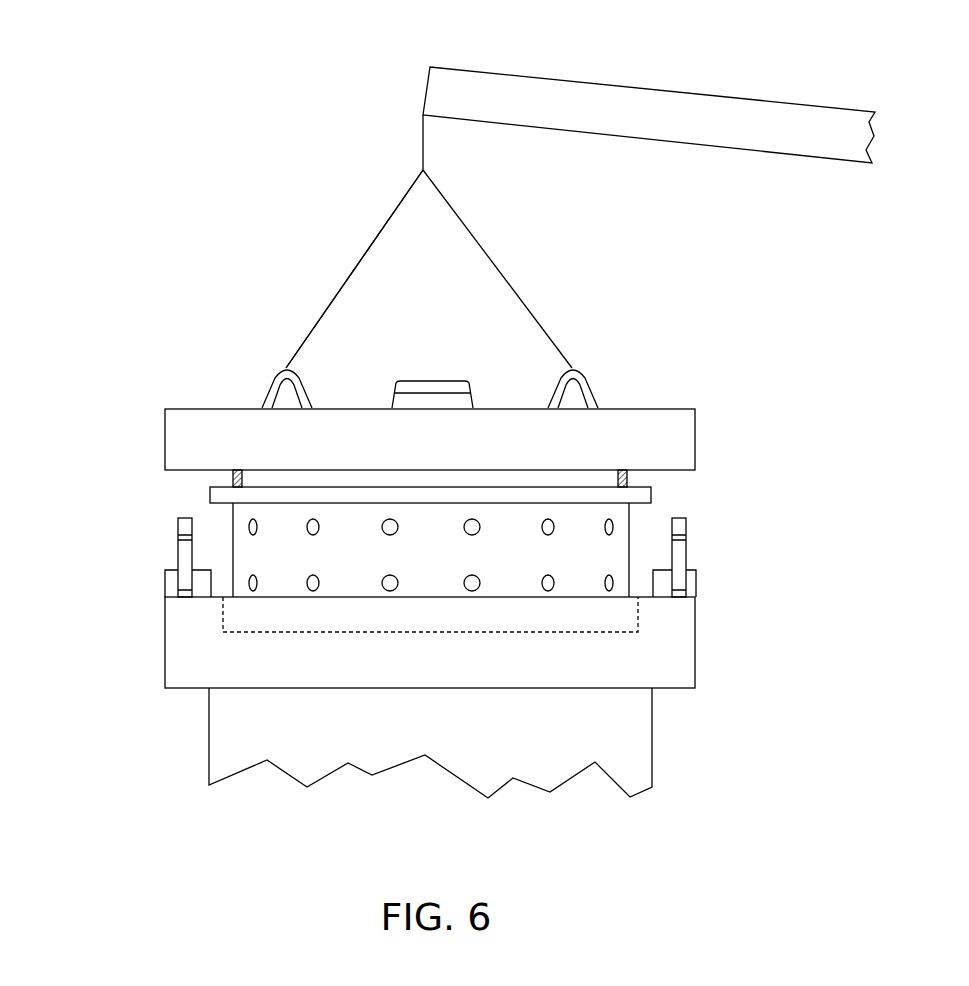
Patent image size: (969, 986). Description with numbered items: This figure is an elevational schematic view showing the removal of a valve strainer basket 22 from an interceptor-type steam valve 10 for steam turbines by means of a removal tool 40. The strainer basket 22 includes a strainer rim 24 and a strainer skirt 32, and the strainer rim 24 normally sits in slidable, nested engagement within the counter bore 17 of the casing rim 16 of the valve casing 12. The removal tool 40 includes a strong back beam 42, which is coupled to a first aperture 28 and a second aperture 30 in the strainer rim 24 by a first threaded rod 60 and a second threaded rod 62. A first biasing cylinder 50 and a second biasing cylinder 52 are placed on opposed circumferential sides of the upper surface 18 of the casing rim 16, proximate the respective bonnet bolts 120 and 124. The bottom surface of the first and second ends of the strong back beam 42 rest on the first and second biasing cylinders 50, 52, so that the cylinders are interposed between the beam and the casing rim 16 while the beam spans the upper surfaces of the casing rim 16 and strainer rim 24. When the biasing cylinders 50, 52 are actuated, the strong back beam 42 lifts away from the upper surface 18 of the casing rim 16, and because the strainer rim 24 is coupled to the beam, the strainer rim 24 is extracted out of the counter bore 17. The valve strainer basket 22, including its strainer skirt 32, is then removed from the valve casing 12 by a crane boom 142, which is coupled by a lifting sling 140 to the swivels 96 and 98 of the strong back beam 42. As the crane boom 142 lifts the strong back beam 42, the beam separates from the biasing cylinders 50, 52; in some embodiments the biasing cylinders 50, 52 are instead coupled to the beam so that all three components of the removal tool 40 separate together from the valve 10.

The interceptor-type steam valve 10 is at (194, 733).
The valve casing 12 is at (659, 730).
The casing rim 16 is at (188, 652).
The counter bore 17 is at (287, 617).
The upper surface 18 is at (337, 597).
The valve strainer basket 22 is at (633, 516).
The strainer rim 24 is at (213, 494).
The aperture 28 is at (233, 470).
The aperture 30 is at (627, 470).
The strainer skirt 32 is at (513, 545).
The removal tool 40 is at (541, 252).
The strong back beam 42 is at (337, 426).
The first biasing cylinder 50 is at (167, 583).
The second biasing cylinder 52 is at (693, 582).
The first threaded rod 60 is at (232, 474).
The second threaded rod 62 is at (630, 483).
The swivel 96 is at (272, 378).
The swivel 98 is at (593, 376).
The bonnet bolt 120 is at (183, 552).
The bonnet bolt 124 is at (680, 553).
The lifting sling 140 is at (349, 278).
The crane boom 142 is at (657, 122).